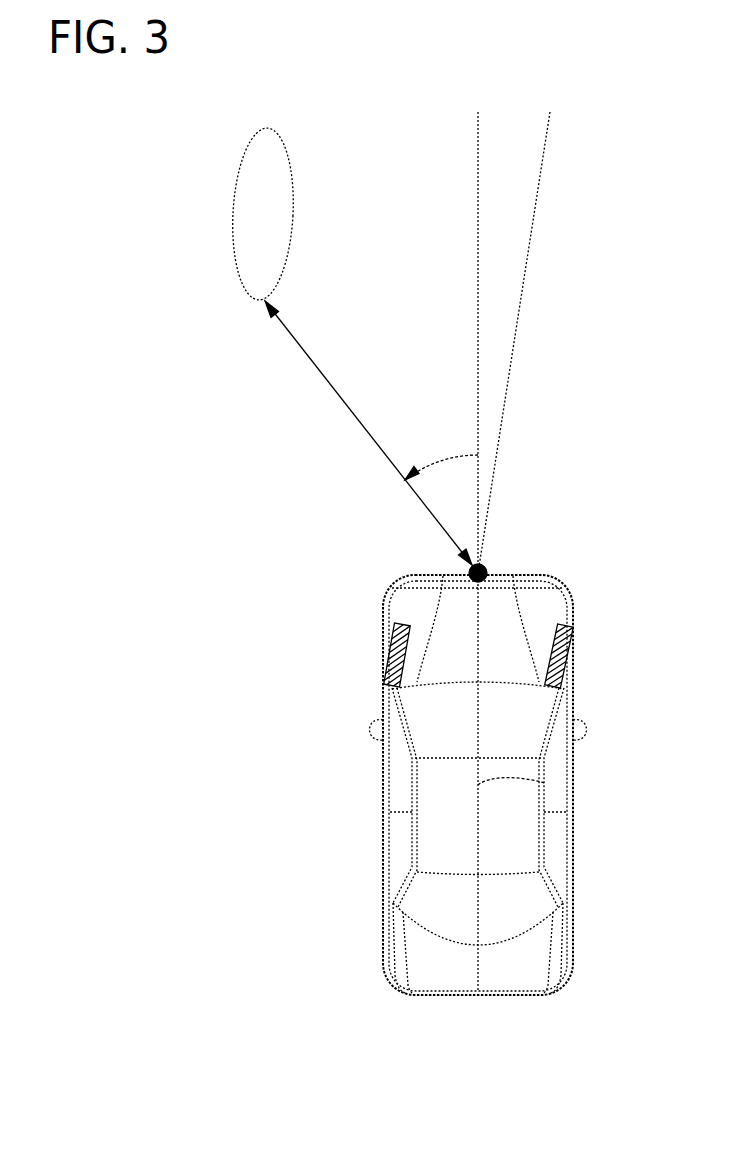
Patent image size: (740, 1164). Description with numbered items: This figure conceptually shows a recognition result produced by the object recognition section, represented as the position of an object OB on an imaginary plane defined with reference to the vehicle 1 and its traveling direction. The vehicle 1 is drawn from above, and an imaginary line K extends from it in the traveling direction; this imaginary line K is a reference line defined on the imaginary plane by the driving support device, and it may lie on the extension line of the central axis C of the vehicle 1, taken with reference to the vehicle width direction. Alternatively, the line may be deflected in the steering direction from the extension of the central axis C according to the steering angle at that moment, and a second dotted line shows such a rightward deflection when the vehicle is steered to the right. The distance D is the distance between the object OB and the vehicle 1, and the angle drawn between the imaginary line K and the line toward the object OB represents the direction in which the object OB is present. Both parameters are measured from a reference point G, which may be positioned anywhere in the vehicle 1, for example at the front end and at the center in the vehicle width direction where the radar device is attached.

The vehicle 1 is at (576, 934).
The central axis C is at (545, 783).
The imaginary line K is at (477, 297).
The object OB is at (284, 158).
The distance D is at (340, 404).
The reference point G is at (492, 566).